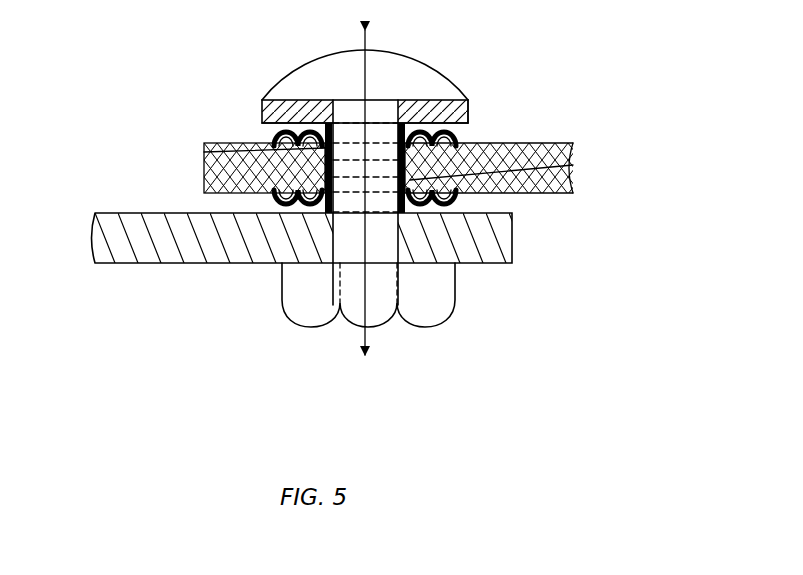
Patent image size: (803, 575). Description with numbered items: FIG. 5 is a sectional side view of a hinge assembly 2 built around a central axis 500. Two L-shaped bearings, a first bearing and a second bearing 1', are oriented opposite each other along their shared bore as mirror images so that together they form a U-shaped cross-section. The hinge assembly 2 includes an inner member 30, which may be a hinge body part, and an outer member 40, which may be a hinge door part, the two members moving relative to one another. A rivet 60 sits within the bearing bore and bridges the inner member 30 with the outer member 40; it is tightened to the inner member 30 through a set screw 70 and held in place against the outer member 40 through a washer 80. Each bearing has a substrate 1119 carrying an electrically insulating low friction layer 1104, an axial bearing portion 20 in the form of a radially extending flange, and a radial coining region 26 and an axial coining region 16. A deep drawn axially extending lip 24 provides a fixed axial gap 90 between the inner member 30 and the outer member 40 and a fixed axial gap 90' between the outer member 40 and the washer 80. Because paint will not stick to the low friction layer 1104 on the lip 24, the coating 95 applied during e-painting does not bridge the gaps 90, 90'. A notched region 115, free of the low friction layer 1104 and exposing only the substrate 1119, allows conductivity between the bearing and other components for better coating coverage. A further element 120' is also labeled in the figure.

The hinge assembly 2 is at (585, 40).
The axial bearing portion 20 is at (348, 125).
The low friction layer 1104 is at (287, 125).
The deep drawn axially extending lip 24 is at (262, 122).
The radial coining region 26 is at (428, 123).
The rivet 60 is at (458, 90).
The washer 80 is at (466, 121).
The fixed axial gap 90 is at (460, 159).
The fixed axial gap 90' is at (489, 207).
The coating 95 is at (272, 136).
The outer member 40 is at (550, 145).
The notched region 115 is at (573, 165).
The substrate 1119 is at (204, 152).
The inner member 30 is at (512, 246).
The set screw 70 is at (456, 273).
The axial coining region 16 is at (400, 215).
The central axis 500 is at (368, 342).
The second bearing 1' is at (265, 273).
The shank portion 120' is at (326, 312).